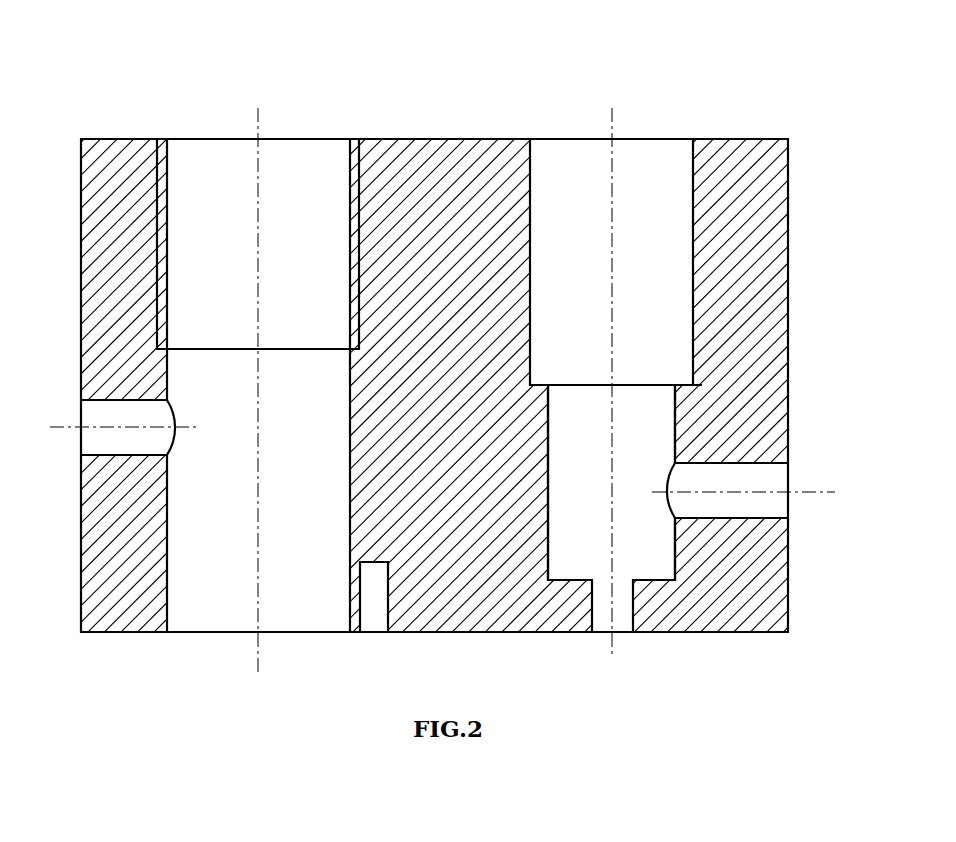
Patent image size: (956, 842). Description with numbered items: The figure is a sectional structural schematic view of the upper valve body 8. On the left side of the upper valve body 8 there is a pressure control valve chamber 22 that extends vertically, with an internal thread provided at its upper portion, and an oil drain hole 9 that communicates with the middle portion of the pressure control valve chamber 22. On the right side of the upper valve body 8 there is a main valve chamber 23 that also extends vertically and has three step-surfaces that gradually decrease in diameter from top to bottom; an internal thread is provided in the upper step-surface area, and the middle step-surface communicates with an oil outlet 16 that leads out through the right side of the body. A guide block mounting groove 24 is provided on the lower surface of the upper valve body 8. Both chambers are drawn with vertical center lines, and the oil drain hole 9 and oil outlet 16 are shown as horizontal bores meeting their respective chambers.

The upper valve body 8 is at (485, 138).
The pressure control valve chamber 22 is at (213, 307).
The oil drain hole 9 is at (108, 415).
The guide block mounting groove 24 is at (375, 616).
The main valve chamber 23 is at (623, 408).
The oil outlet 16 is at (745, 478).